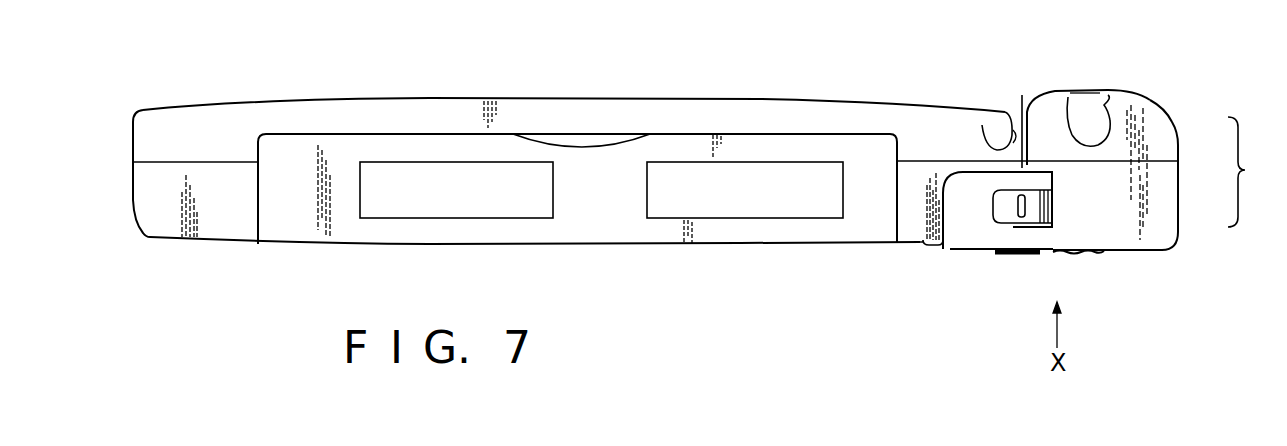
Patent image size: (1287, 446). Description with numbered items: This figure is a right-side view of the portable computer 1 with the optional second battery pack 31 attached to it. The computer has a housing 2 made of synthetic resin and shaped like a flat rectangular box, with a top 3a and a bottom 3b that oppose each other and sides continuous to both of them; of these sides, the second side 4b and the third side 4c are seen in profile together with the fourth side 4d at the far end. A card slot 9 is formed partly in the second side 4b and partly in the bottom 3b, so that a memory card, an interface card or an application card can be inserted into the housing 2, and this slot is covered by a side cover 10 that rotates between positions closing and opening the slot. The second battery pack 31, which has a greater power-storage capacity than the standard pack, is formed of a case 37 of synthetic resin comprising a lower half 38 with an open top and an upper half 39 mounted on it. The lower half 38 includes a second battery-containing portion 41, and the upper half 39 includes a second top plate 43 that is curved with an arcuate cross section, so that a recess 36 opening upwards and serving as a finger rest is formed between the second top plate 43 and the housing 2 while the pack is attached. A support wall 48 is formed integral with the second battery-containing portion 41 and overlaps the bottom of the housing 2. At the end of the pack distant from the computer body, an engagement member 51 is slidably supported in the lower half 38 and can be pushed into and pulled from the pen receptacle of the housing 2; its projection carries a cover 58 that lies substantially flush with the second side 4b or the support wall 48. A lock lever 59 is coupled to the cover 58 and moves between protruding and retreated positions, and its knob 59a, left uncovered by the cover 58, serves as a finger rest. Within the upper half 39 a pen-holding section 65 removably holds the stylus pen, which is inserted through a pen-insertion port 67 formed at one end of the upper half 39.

The portable computer 1 is at (568, 99).
The housing 2 is at (787, 112).
The top 3a is at (443, 99).
The bottom 3b is at (233, 244).
The second side 4b is at (913, 228).
The third side 4c is at (983, 121).
The fourth side 4d is at (133, 136).
The card slot 9 is at (258, 220).
The side cover 10 is at (593, 233).
The second battery pack 31 is at (1163, 103).
The recess 36 is at (1022, 95).
The case 37 is at (1256, 172).
The lower half 38 is at (1163, 197).
The upper half 39 is at (1163, 145).
The second battery-containing portion 41 is at (1167, 233).
The second top plate 43 is at (1157, 125).
The support wall 48 is at (937, 244).
The engagement member 51 is at (1043, 233).
The cover 58 is at (968, 230).
The lock lever 59 is at (1000, 203).
The knob 59a is at (1016, 223).
The pen-holding section 65 is at (1093, 145).
The pen-insertion port 67 is at (1098, 92).